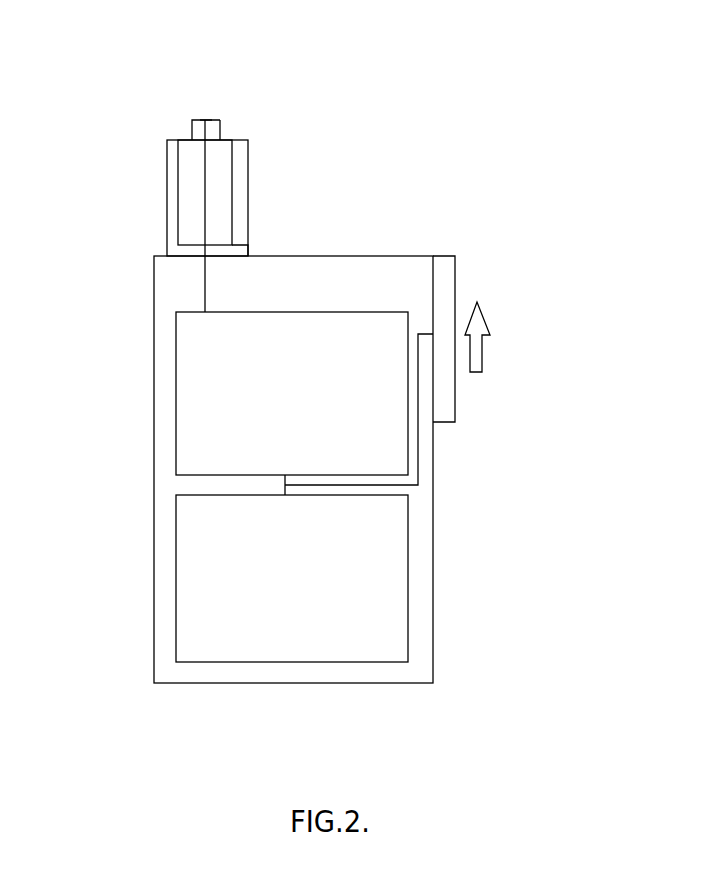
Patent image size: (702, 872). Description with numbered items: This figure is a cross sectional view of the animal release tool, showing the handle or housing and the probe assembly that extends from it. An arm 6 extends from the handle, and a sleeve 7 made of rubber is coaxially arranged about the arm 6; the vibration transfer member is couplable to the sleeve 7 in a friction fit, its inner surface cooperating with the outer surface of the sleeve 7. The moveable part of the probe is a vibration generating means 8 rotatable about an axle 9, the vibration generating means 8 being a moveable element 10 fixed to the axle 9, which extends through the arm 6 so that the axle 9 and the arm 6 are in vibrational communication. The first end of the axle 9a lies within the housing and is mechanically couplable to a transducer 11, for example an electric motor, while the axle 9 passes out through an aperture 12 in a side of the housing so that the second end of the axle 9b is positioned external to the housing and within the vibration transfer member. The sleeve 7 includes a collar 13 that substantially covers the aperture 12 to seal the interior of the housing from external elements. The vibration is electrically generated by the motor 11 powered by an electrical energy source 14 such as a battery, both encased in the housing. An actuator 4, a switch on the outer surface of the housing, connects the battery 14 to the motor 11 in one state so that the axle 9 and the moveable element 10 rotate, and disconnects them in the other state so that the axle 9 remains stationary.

The actuator 4 is at (448, 398).
The arm 6 is at (234, 180).
The sleeve 7 is at (166, 222).
The vibration generating means 8 is at (212, 102).
The axle 9 is at (205, 147).
The first end of the axle 9a is at (205, 118).
The second end of the axle 9b is at (206, 290).
The moveable element 10 is at (222, 132).
The transducer 11 is at (192, 412).
The aperture 12 is at (228, 257).
The collar 13 is at (253, 245).
The electrical energy source 14 is at (193, 572).